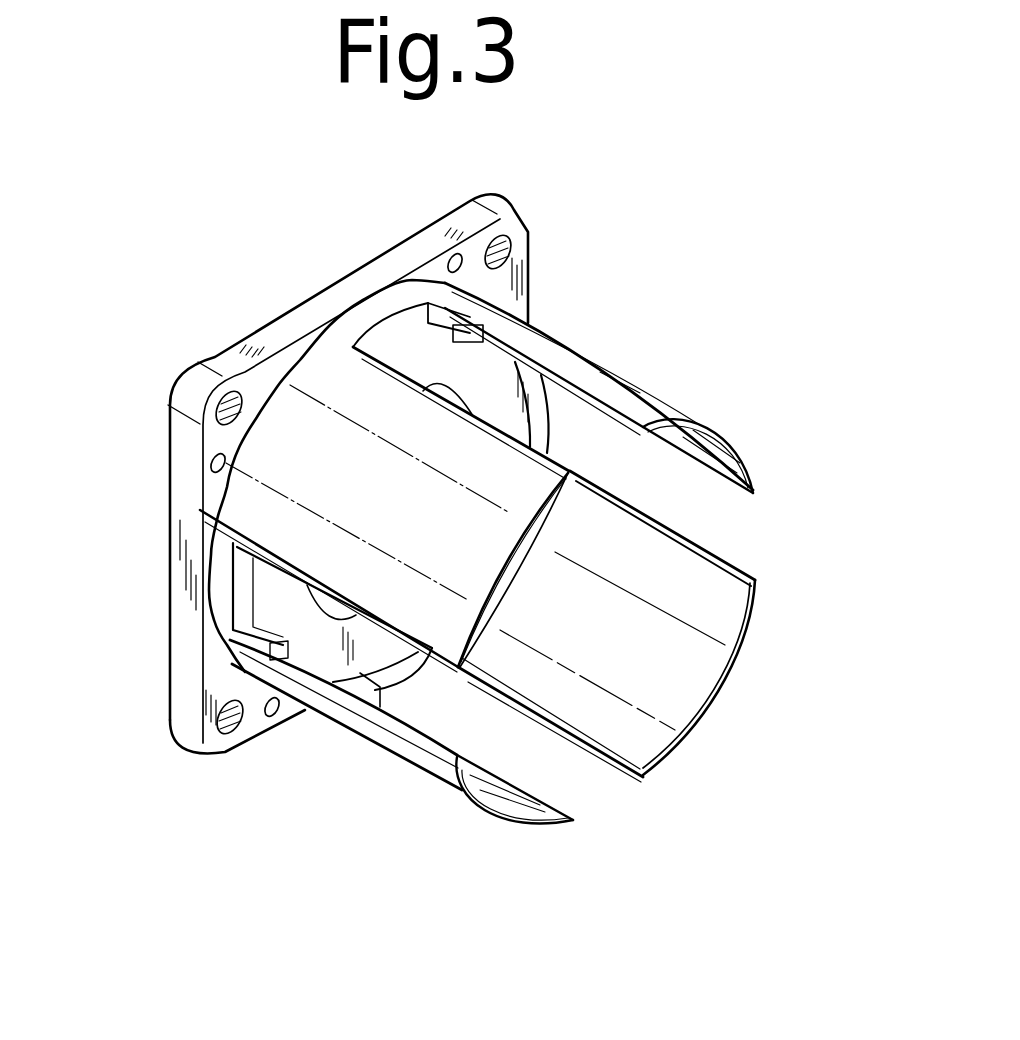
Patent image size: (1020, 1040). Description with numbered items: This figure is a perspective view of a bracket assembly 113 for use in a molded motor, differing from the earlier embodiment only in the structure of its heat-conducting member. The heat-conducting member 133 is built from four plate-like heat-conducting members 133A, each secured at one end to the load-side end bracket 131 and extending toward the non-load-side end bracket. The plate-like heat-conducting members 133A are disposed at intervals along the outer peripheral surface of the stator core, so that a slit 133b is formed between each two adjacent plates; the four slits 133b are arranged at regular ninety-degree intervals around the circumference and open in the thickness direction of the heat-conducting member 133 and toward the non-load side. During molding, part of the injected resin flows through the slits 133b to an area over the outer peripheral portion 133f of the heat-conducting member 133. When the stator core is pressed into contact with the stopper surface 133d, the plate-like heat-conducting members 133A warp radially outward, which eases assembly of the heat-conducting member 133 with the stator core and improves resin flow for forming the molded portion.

The bracket assembly 113 is at (232, 327).
The load-side end bracket 131 is at (302, 303).
The heat-conducting member 133 is at (404, 577).
The plate-like heat-conducting member 133A is at (628, 400).
The slit 133b is at (510, 340).
The stopper surface 133d is at (483, 336).
The outer peripheral portion 133f is at (575, 362).